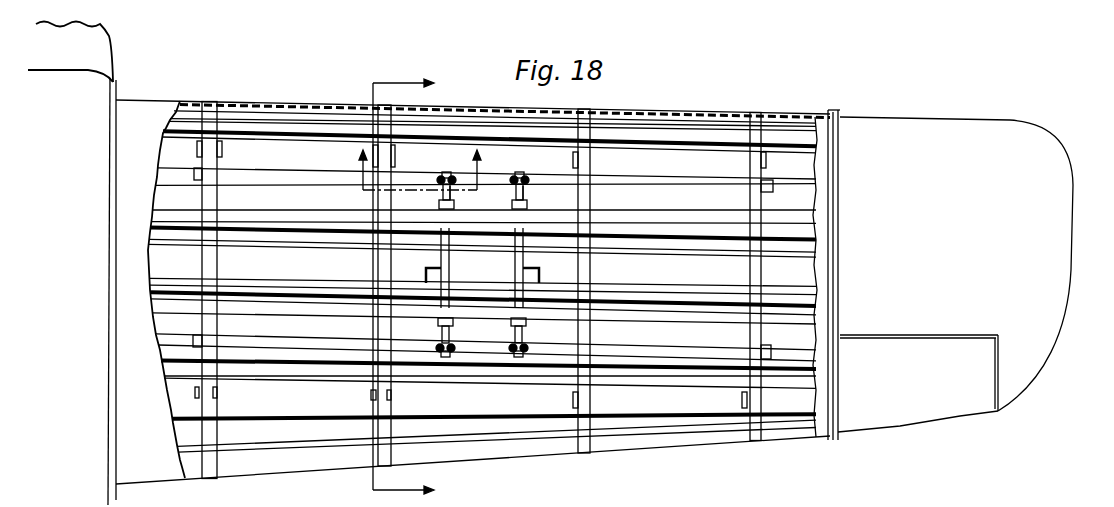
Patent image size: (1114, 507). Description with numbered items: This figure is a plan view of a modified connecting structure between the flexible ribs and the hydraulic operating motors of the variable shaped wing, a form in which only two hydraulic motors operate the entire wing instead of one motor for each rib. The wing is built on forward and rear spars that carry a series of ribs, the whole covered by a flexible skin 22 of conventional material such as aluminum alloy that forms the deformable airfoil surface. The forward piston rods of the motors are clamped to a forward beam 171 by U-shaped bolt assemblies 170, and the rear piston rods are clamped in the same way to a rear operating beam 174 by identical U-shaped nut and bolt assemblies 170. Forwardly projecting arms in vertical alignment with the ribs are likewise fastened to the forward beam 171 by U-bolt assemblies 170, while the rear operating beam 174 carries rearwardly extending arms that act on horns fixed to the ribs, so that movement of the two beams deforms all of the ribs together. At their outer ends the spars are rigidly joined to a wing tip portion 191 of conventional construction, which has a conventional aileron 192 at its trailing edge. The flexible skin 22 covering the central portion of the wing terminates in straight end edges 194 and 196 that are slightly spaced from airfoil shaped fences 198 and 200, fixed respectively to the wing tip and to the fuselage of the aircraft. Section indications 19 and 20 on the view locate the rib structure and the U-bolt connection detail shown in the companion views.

The section line for FIGURE 19 is at (422, 290).
The section line for FIGURE 20 is at (403, 169).
The flexible skin 22 is at (677, 114).
The U-shaped bolt assembly 170 is at (521, 178).
The forward beam 171 is at (650, 187).
The rear operating beam 174 is at (613, 351).
The wing tip portion 191 is at (968, 135).
The aileron 192 is at (935, 412).
The straight end edge of skin 194 is at (122, 158).
The straight end edge of skin 196 is at (831, 205).
The airfoil shaped fence 198 is at (835, 115).
The airfoil shaped fence 200 is at (117, 80).